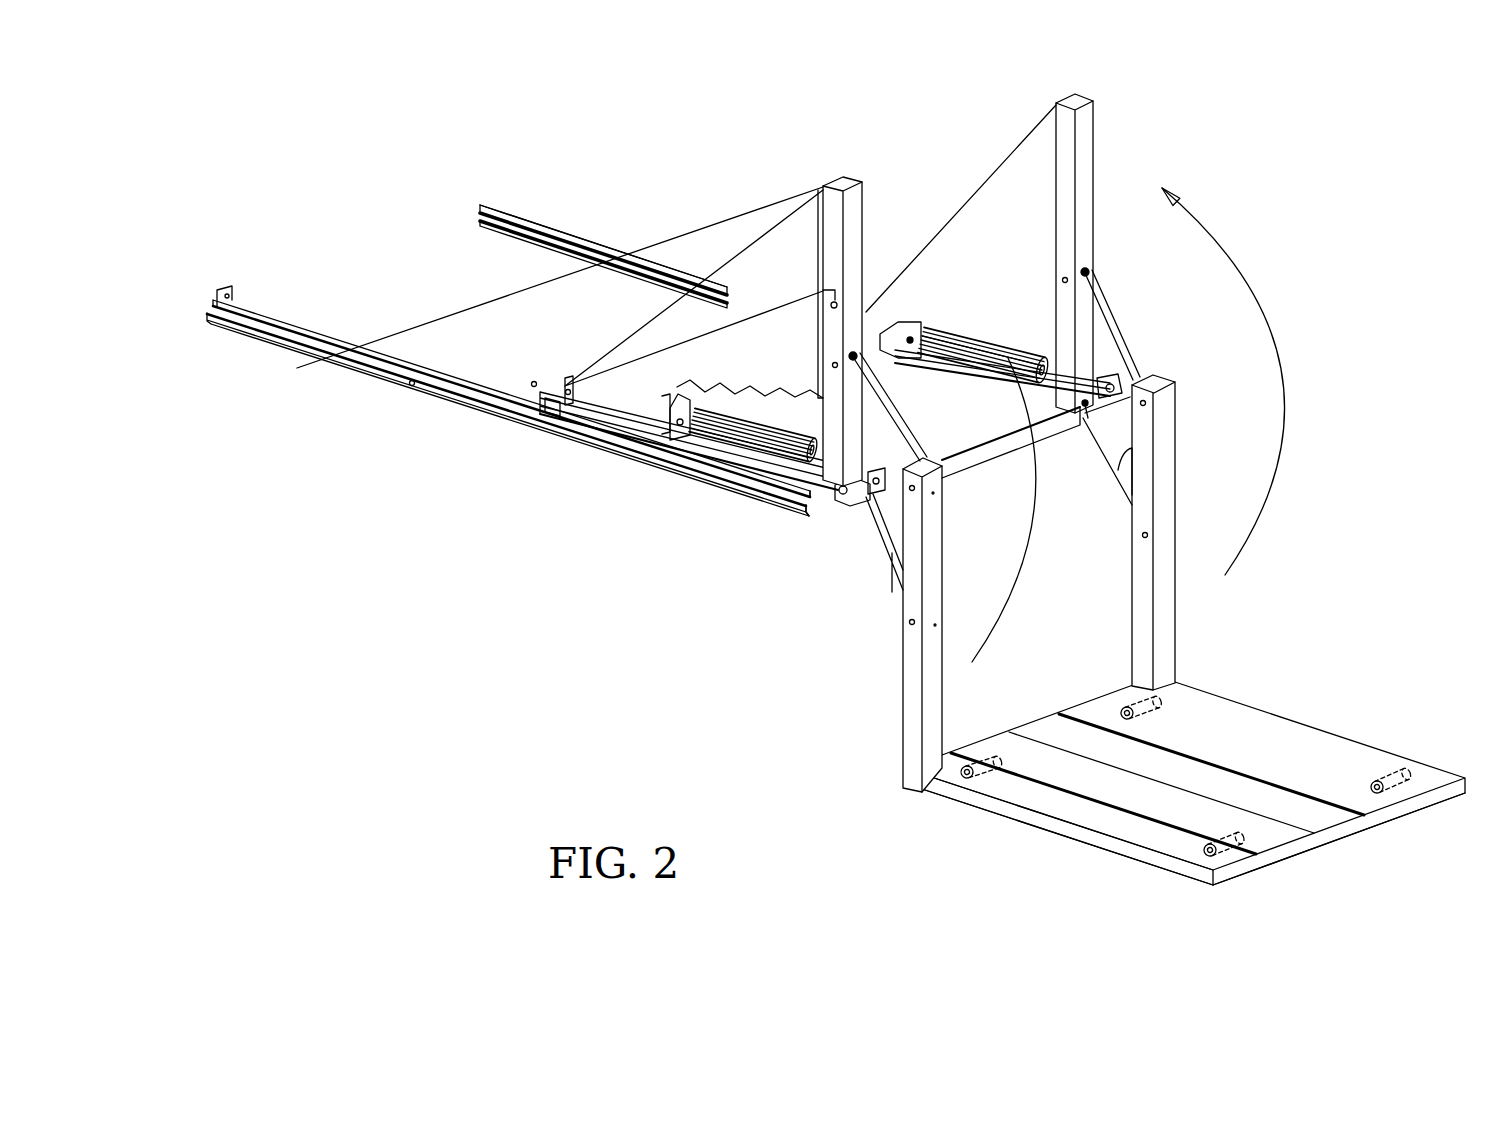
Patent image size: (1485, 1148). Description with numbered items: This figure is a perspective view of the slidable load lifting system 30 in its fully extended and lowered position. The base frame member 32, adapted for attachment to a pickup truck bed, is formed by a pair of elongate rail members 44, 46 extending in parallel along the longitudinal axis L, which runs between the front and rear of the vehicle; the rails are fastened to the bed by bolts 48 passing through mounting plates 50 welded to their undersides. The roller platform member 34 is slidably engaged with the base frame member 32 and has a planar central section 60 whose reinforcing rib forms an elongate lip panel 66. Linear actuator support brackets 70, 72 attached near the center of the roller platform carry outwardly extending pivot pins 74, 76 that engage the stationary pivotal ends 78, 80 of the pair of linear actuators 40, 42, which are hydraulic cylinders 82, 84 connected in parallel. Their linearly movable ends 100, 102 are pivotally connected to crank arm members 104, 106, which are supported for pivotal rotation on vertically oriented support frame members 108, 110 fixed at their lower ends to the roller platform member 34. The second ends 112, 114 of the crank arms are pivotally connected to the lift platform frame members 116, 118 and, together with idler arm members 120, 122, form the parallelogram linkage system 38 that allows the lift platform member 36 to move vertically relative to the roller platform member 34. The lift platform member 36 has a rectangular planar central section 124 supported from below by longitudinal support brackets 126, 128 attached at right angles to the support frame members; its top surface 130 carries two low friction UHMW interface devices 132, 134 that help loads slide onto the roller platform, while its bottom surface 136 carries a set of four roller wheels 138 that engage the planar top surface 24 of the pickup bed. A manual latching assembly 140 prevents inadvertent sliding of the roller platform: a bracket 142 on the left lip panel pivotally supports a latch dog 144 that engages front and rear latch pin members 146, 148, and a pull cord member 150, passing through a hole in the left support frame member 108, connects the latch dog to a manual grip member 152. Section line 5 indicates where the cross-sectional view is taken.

The section line 5 is at (663, 233).
The longitudinal axis L is at (431, 266).
The planar top surface 24 is at (401, 277).
The load lifting system 30 is at (446, 603).
The base frame member 32 is at (271, 292).
The roller platform member 34 is at (992, 422).
The lift platform member 36 is at (1407, 744).
The parallelogram linkage system 38 is at (1137, 318).
The linear actuator 40 is at (773, 420).
The linear actuator 42 is at (1008, 338).
The elongate rail member 44 is at (337, 341).
The elongate rail member 46 is at (567, 240).
The bolts 48 is at (410, 386).
The mounting plates 50 is at (255, 340).
The planar central section 60 is at (947, 398).
The elongate lip panel 66 is at (820, 497).
The linear actuator support bracket 70 is at (693, 408).
The linear actuator support bracket 72 is at (983, 327).
The pivot pin 74 is at (682, 426).
The pivot pin 76 is at (909, 345).
The stationary pivotal end 78 is at (676, 412).
The stationary pivotal end 80 is at (915, 330).
The hydraulic cylinder 82 is at (735, 424).
The hydraulic cylinder 84 is at (1010, 348).
The linearly movable end 100 is at (853, 488).
The linearly movable end 102 is at (1122, 382).
The crank arm member 104 is at (892, 584).
The crank arm member 106 is at (1103, 473).
The support frame member 108 is at (865, 213).
The support frame member 110 is at (1096, 135).
The second end 112 is at (907, 626).
The second end 114 is at (1140, 537).
The lift platform frame member 116 is at (900, 680).
The lift platform frame member 118 is at (1131, 583).
The idler arm member 120 is at (883, 416).
The idler arm member 122 is at (1105, 305).
The planar central section 124 is at (1250, 797).
The longitudinal support bracket 126 is at (1127, 878).
The longitudinal support bracket 128 is at (1391, 843).
The top surface 130 is at (1156, 760).
The low friction interface device 132 is at (1082, 796).
The low friction interface device 134 is at (1204, 758).
The bottom surface 136 is at (1030, 830).
The roller wheels 138 is at (1137, 705).
The manual latching assembly 140 is at (601, 320).
The bracket 142 is at (567, 388).
The latch dog 144 is at (562, 392).
The latch pin member 146 is at (209, 272).
The latch pin member 148 is at (531, 382).
The pull cord member 150 is at (644, 330).
The manual grip member 152 is at (838, 303).